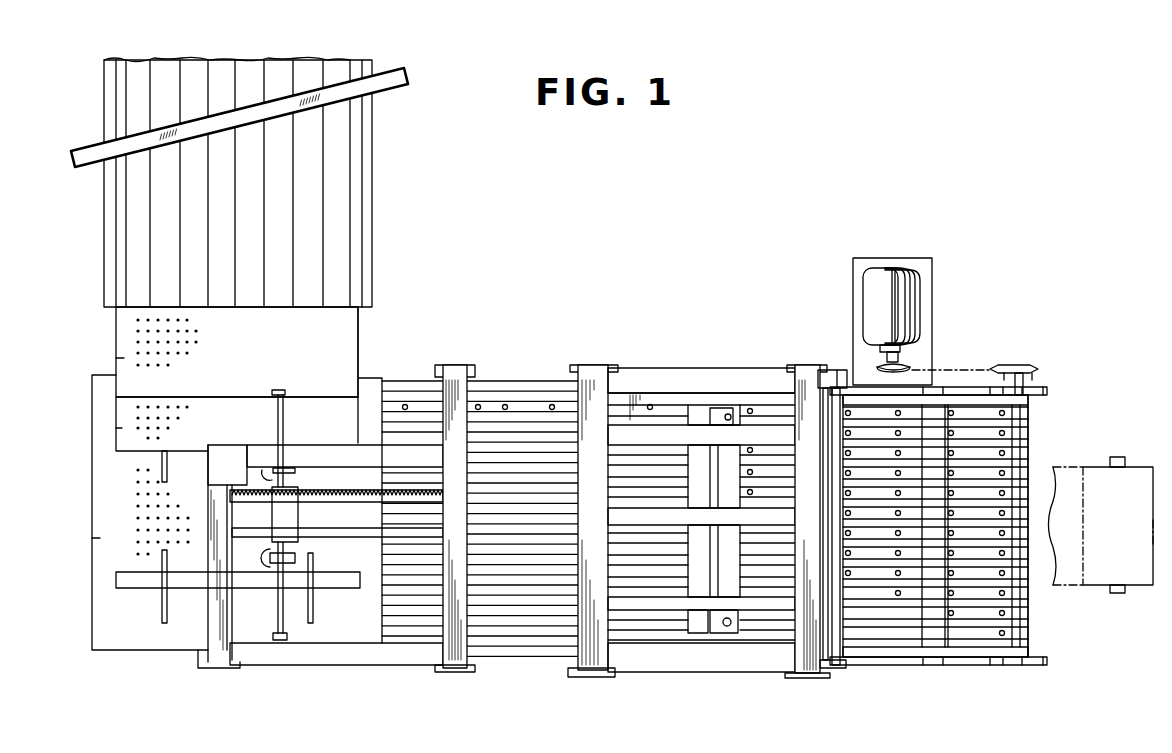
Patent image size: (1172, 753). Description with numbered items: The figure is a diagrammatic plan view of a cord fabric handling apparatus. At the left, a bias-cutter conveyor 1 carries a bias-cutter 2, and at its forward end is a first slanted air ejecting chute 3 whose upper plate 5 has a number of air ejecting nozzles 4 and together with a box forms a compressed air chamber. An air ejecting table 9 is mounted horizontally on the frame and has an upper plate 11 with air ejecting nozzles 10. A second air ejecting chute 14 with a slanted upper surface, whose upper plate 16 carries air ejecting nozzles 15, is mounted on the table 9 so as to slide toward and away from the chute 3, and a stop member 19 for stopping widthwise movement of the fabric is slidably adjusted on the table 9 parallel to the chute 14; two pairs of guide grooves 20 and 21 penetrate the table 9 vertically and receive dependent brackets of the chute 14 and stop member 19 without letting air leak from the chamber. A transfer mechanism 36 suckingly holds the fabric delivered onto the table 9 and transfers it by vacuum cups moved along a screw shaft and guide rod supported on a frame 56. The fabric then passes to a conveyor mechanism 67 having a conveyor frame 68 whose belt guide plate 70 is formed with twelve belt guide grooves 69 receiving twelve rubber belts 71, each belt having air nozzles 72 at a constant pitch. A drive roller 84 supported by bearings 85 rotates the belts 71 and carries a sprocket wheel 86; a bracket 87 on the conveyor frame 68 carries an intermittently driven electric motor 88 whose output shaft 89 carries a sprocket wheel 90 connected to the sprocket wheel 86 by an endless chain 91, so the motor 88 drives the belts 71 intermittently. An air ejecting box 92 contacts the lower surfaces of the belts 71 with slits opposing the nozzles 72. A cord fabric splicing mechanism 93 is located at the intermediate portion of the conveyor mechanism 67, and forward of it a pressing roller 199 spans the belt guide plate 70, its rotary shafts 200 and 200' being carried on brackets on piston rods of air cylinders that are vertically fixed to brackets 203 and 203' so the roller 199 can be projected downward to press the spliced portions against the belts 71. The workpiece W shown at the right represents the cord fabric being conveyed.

The bias-cutter conveyor 1 is at (130, 218).
The bias-cutter 2 is at (92, 150).
The first slanted air ejecting chute 3 is at (114, 324).
The air ejecting nozzles 4 is at (138, 336).
The upper plate 5 is at (124, 358).
The air ejecting table 9 is at (104, 507).
The air ejecting nozzles 10 is at (140, 538).
The upper plate 11 is at (100, 538).
The second air ejecting chute 14 is at (108, 399).
The air ejecting nozzles 15 is at (132, 436).
The upper plate 16 is at (120, 428).
The stop member 19 is at (116, 578).
The guide grooves 20 is at (161, 461).
The guide grooves 21 is at (160, 612).
The transfer mechanism 36 is at (274, 626).
The frame 56 is at (399, 664).
The conveyor mechanism 67 is at (510, 664).
The conveyor frame 68 is at (551, 655).
The belt guide grooves 69 is at (476, 404).
The belt guide plate 70 is at (516, 395).
The rubber belts 71 is at (549, 404).
The air nozzles 72 is at (405, 404).
The drive roller 84 is at (1032, 648).
The bearings 85 is at (1033, 388).
The sprocket wheel 86 is at (1029, 364).
The bracket 87 is at (893, 258).
The electric motor 88 is at (920, 285).
The output shaft 89 is at (902, 352).
The sprocket wheel 90 is at (908, 366).
The endless chain 91 is at (974, 366).
The air ejecting box 92 is at (982, 625).
The cord fabric splicing mechanism 93 is at (672, 684).
The pressing roller 199 is at (848, 612).
The rotary shaft 200 is at (859, 542).
The rotary shaft 200' is at (820, 360).
The bracket 203 is at (837, 688).
The bracket 203' is at (793, 363).
The workpiece W is at (1147, 585).